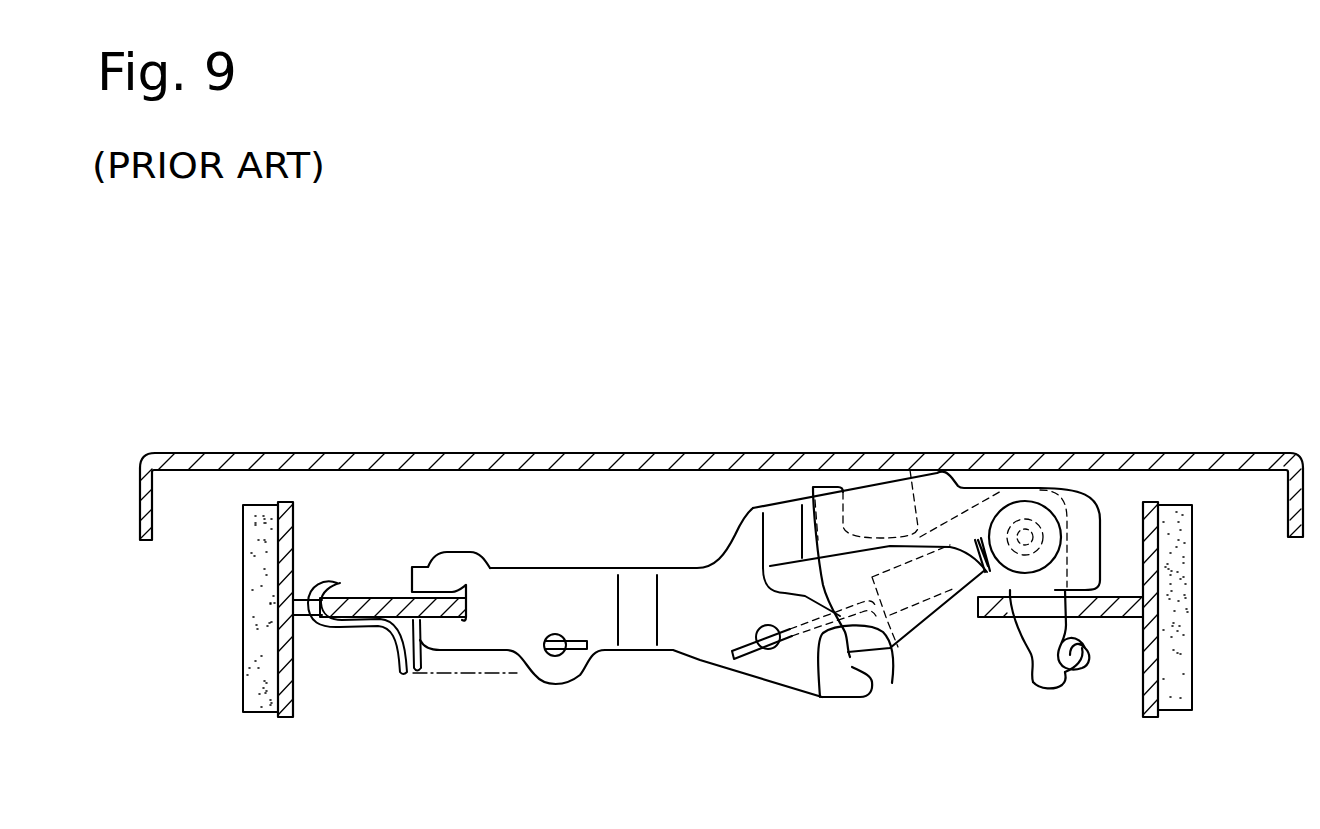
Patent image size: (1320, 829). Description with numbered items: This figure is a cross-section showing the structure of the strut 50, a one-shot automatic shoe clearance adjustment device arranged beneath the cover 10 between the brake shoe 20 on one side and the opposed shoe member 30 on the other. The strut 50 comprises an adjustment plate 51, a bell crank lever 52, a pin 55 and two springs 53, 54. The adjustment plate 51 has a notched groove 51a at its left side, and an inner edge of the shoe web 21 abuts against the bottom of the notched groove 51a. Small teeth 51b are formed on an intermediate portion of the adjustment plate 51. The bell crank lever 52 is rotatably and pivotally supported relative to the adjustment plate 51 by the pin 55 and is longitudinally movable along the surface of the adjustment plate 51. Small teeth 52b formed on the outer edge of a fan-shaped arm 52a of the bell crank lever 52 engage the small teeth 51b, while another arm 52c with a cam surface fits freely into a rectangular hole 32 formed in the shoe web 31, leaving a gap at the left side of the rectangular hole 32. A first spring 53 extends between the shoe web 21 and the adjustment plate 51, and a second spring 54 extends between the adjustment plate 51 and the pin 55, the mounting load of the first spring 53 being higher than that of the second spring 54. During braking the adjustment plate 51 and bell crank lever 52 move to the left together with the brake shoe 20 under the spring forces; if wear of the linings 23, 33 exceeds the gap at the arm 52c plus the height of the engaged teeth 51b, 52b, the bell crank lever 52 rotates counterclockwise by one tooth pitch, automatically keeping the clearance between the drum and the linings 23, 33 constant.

The cover plate 10 is at (193, 453).
The brake shoe 20 is at (232, 609).
The shoe web 21 is at (375, 597).
The lining 23 is at (243, 582).
The second side member 30 is at (1222, 609).
The shoe web 31 is at (1130, 597).
The rectangular hole 32 is at (1100, 640).
The lining 33 is at (1195, 583).
The strut 50 is at (647, 550).
The adjustment plate 51 is at (753, 508).
The notched groove 51a is at (455, 590).
The small teeth 51b is at (883, 633).
The bell crank lever 52 is at (917, 530).
The fan-shaped arm 52a is at (930, 625).
The small teeth 52b is at (820, 697).
The other arm 52c is at (1033, 673).
The first spring 53 is at (404, 673).
The second spring 54 is at (898, 647).
The pin 55 is at (1025, 503).